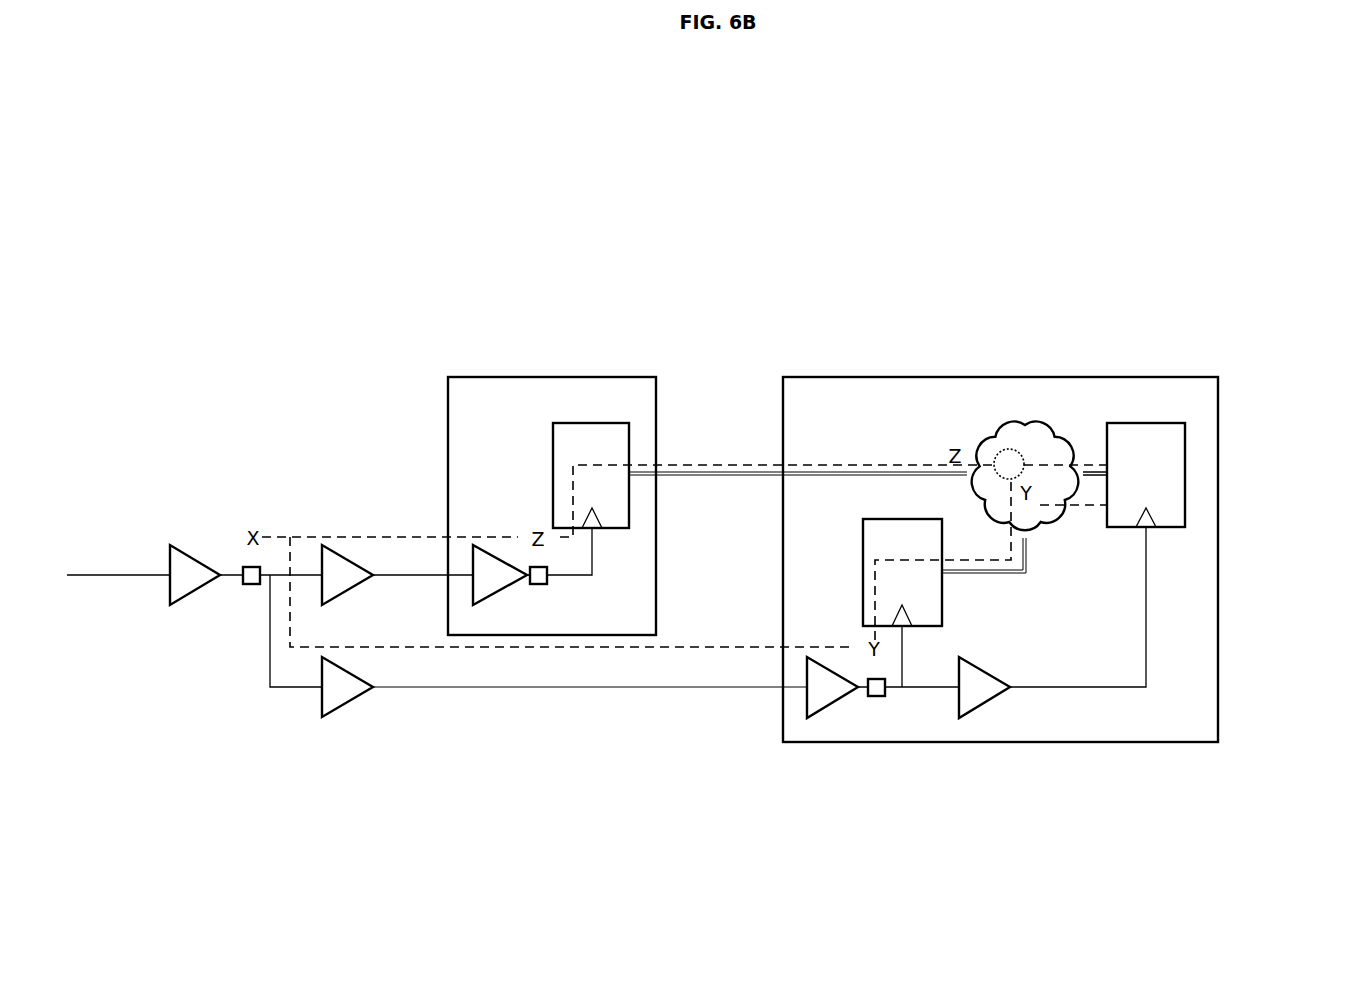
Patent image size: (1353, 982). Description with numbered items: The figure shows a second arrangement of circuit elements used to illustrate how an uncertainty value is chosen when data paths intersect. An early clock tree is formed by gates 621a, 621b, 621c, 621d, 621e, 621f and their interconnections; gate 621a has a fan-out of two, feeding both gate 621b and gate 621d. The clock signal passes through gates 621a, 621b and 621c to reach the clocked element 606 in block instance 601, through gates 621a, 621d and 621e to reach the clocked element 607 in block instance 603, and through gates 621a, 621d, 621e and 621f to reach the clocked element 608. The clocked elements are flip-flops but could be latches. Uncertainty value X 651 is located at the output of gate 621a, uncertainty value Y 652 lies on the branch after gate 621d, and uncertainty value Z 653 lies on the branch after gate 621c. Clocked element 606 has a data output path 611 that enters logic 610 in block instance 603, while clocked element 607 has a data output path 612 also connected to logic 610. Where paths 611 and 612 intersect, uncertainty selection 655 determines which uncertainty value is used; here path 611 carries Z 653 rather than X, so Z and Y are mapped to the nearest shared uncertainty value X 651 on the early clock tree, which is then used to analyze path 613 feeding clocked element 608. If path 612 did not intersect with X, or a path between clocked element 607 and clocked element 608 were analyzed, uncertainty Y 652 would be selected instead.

The block instance 601 is at (552, 377).
The block instance 603 is at (1002, 377).
The clocked element 606 is at (592, 423).
The clocked element 607 is at (863, 570).
The clocked element 608 is at (1185, 472).
The logic 610 is at (1058, 527).
The data output path 611 is at (750, 472).
The path 612 is at (978, 575).
The path 613 is at (1092, 472).
The gate 621a is at (200, 558).
The gate 621b is at (350, 558).
The gate 621c is at (503, 558).
The gate 621d is at (345, 705).
The gate 621e is at (833, 703).
The gate 621f is at (983, 707).
The uncertainty value X 651 is at (251, 585).
The uncertainty value Y 652 is at (876, 696).
The uncertainty value Z 653 is at (538, 585).
The uncertainty selection 655 is at (1010, 449).